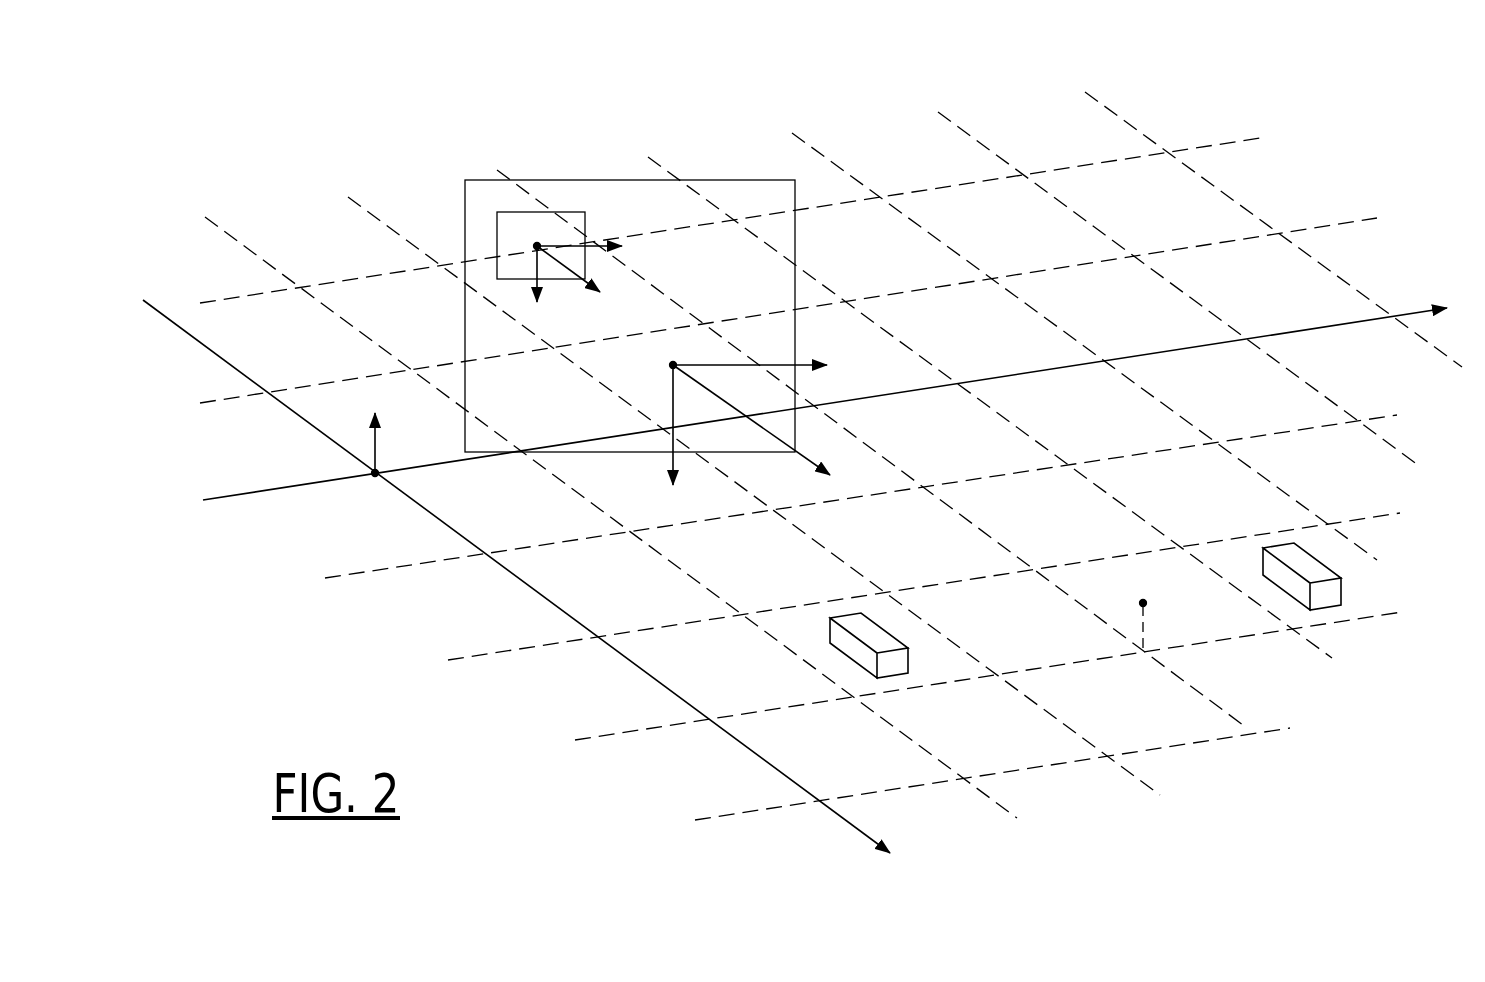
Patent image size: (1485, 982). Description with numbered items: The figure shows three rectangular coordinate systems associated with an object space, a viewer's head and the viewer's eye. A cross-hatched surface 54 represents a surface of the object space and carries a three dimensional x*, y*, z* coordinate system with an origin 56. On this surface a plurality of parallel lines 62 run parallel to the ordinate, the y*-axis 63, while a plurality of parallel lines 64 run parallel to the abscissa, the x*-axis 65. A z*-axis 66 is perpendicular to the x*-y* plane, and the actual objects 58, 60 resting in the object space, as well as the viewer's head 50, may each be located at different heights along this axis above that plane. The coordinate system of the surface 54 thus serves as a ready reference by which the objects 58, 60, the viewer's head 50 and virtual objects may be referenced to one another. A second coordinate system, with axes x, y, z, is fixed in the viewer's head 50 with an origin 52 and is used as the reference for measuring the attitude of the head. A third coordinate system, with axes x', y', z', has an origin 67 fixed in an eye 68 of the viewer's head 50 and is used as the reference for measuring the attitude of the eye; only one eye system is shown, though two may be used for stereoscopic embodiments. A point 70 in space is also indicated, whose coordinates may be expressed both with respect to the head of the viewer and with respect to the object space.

The viewer's head 50 is at (555, 180).
The origin 52 is at (669, 363).
The cross-hatched surface 54 is at (851, 763).
The origin 56 is at (373, 481).
The actual object 58 is at (1318, 558).
The actual object 60 is at (880, 627).
The parallel lines 62 is at (1102, 163).
The ordinate (y*-axis) 63 is at (432, 466).
The parallel lines 64 is at (383, 220).
The abscissa (x*-axis) 65 is at (527, 583).
The z*-axis 66 is at (378, 447).
The origin 67 is at (535, 247).
The eye 68 is at (551, 212).
The point 70 is at (1146, 600).